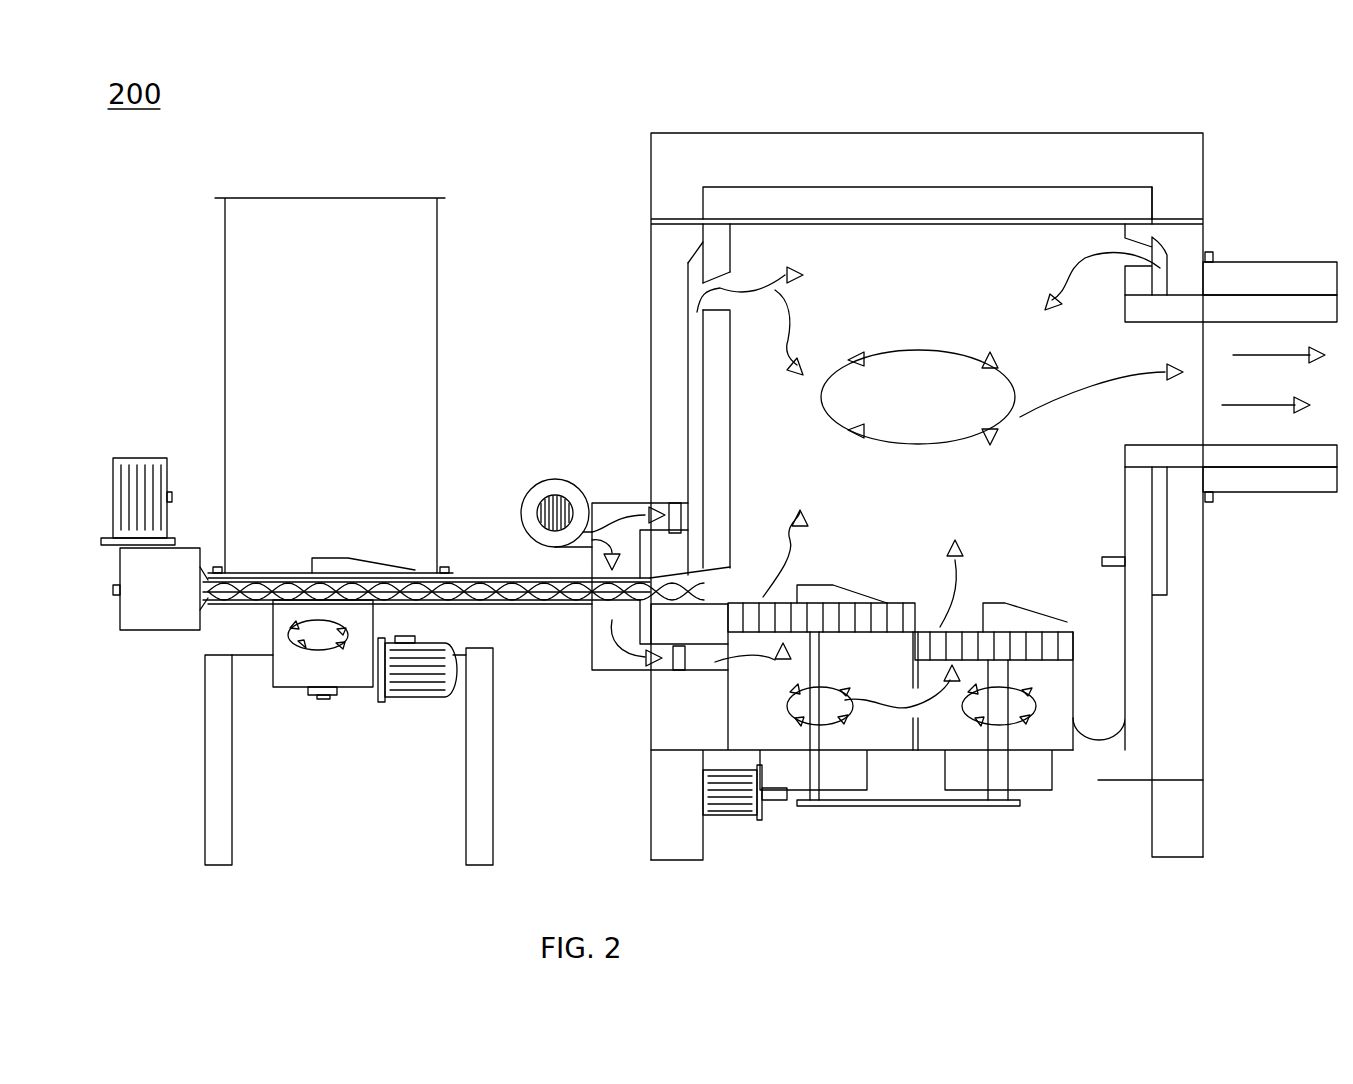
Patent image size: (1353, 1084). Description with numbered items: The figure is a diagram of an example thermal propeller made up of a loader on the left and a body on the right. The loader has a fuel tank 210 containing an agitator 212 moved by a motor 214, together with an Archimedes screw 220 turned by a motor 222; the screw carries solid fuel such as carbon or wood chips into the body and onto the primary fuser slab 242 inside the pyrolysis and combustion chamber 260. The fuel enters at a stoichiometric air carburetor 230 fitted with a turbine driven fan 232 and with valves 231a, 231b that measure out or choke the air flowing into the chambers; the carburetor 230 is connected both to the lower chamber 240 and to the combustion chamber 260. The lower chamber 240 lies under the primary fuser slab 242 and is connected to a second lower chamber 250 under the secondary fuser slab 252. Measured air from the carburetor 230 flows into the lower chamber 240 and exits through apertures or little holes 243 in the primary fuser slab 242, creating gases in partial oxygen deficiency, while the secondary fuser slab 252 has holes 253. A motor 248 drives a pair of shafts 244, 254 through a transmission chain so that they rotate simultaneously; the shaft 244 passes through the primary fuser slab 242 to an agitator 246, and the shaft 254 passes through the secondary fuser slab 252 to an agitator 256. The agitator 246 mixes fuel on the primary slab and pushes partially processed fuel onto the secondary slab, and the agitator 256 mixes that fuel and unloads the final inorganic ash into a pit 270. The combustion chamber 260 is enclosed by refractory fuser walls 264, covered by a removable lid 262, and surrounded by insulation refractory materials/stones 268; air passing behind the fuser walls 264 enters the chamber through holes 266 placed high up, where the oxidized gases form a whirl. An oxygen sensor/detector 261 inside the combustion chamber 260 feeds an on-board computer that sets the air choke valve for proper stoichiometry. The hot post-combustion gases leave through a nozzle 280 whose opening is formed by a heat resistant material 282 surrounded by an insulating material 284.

The fuel tank 210 is at (270, 226).
The agitator 212 is at (320, 560).
The motor 214 is at (412, 694).
The Archimedes screw 220 is at (247, 590).
The motor 222 is at (130, 497).
The stoichiometric air carburetor 230 is at (607, 515).
The valve 231a is at (680, 520).
The valve 231b is at (673, 663).
The turbine driven fan 232 is at (533, 502).
The lower chamber 240 is at (757, 727).
The primary fuser slab 242 is at (907, 613).
The apertures or little holes 243 is at (747, 620).
The shaft 244 is at (813, 775).
The agitator 246 is at (833, 593).
The motor 248 is at (743, 802).
The lower chamber 250 is at (957, 740).
The secondary fuser slab 252 is at (1047, 643).
The holes 253 is at (1057, 655).
The shaft 254 is at (1000, 773).
The agitator 256 is at (1010, 610).
The pyrolysis and combustion chamber 260 is at (935, 270).
The oxygen sensor/detector 261 is at (1120, 563).
The lid 262 is at (825, 160).
The fuser walls 264 is at (720, 355).
The holes 266 is at (703, 283).
The insulation refractory materials/stones 268 is at (672, 389).
The pit 270 is at (1100, 722).
The nozzle 280 is at (1287, 428).
The heat resistant material 282 is at (1280, 303).
The insulating material 284 is at (1230, 277).